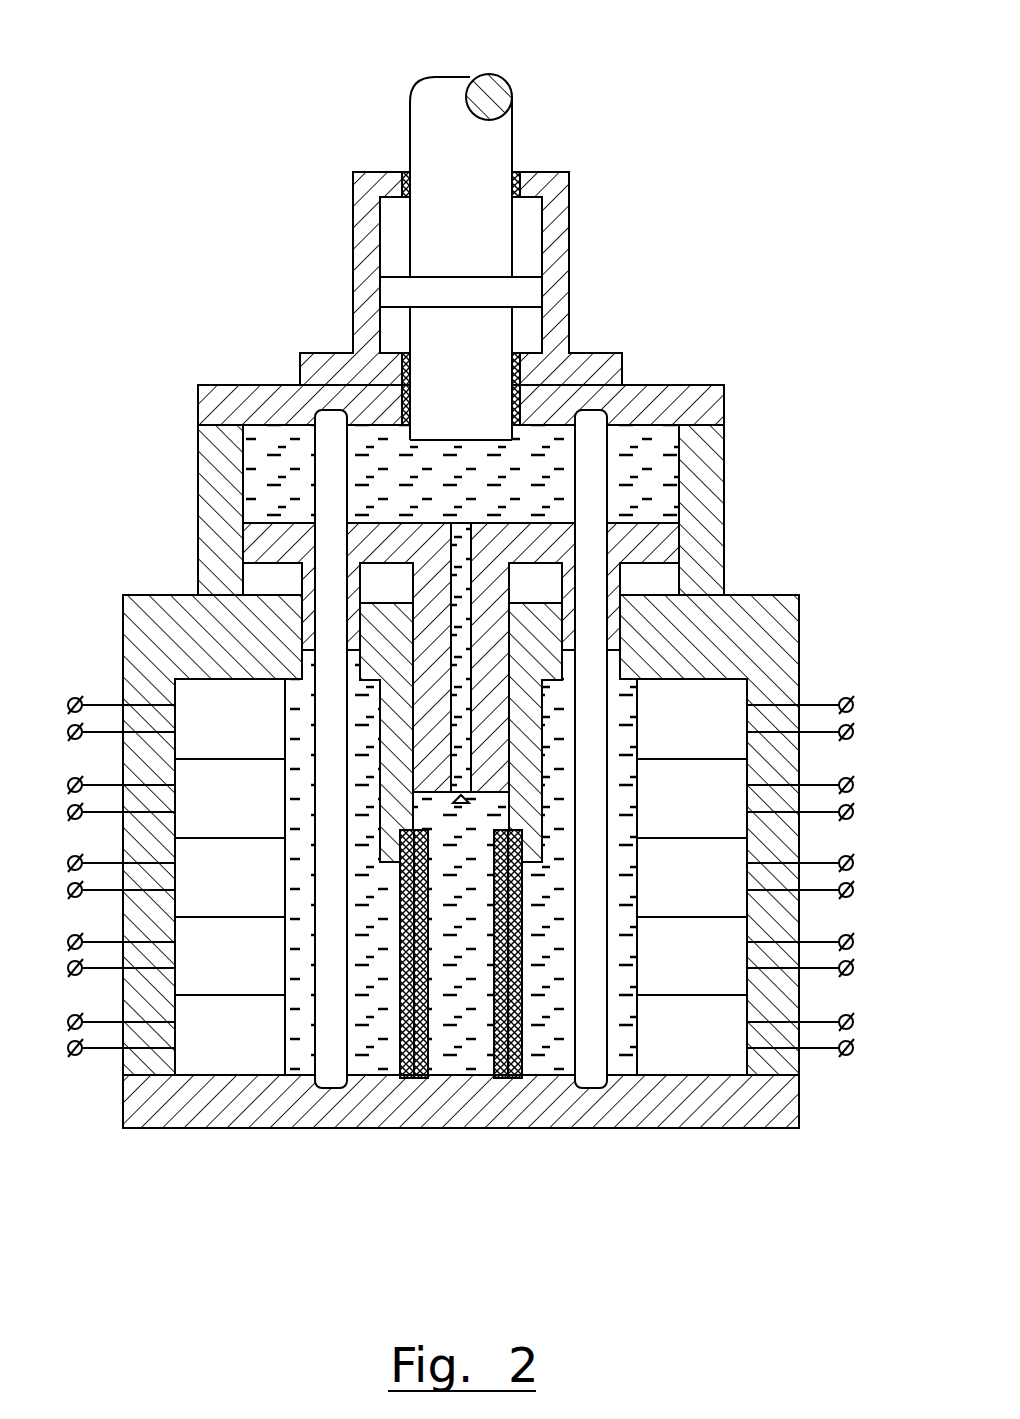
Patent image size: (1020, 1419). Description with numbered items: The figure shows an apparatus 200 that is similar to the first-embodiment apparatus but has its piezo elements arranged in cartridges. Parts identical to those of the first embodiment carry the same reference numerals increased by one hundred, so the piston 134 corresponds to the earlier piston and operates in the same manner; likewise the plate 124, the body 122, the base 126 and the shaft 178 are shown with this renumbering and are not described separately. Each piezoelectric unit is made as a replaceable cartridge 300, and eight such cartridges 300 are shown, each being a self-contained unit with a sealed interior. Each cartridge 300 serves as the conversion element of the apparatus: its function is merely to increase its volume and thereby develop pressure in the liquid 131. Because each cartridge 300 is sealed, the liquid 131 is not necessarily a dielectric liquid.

The apparatus 200 is at (287, 262).
The output shaft 178 is at (493, 143).
The top plate 124 is at (703, 392).
The housing body 122 is at (713, 450).
The piston 134 is at (668, 537).
The replaceable cartridge 300 is at (233, 1047).
The liquid 131 is at (388, 1055).
The base plate 126 is at (700, 1115).